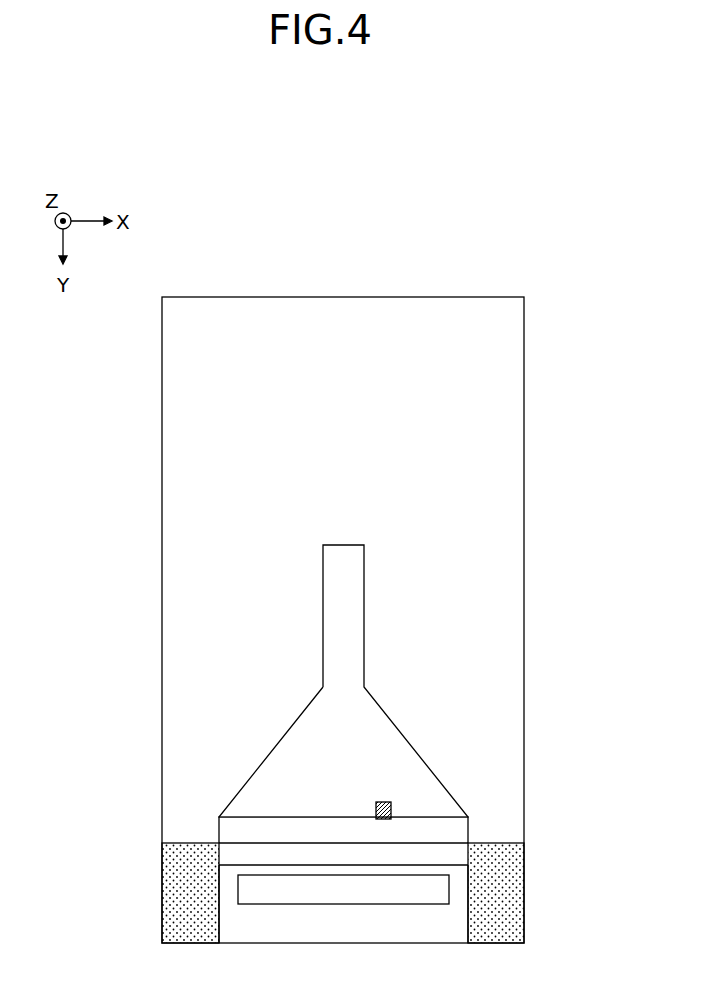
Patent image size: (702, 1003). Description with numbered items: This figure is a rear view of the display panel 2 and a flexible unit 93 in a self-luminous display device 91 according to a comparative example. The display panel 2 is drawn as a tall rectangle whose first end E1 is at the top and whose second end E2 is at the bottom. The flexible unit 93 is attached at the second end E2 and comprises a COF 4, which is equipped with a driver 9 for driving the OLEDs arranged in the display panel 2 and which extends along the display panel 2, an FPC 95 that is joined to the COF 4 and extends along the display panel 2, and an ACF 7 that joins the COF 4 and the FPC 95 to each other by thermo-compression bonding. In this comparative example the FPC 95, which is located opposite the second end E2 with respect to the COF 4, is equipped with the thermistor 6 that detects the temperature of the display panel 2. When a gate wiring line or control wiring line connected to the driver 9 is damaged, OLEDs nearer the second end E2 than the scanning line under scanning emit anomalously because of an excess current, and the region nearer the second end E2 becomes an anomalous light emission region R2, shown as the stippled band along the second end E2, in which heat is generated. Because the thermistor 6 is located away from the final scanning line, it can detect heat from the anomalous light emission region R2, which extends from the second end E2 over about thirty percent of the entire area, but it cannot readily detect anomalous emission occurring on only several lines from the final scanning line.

The display panel 2 is at (528, 354).
The self-luminous display device 91 is at (481, 233).
The flexible unit 93 is at (110, 733).
The FPC 95 is at (262, 765).
The ACF 7 is at (219, 852).
The COF 4 is at (218, 886).
The driver 9 is at (343, 906).
The thermistor 6 is at (388, 802).
The first end E1 is at (208, 297).
The second end E2 is at (208, 946).
The anomalous light emission region R2 is at (512, 895).